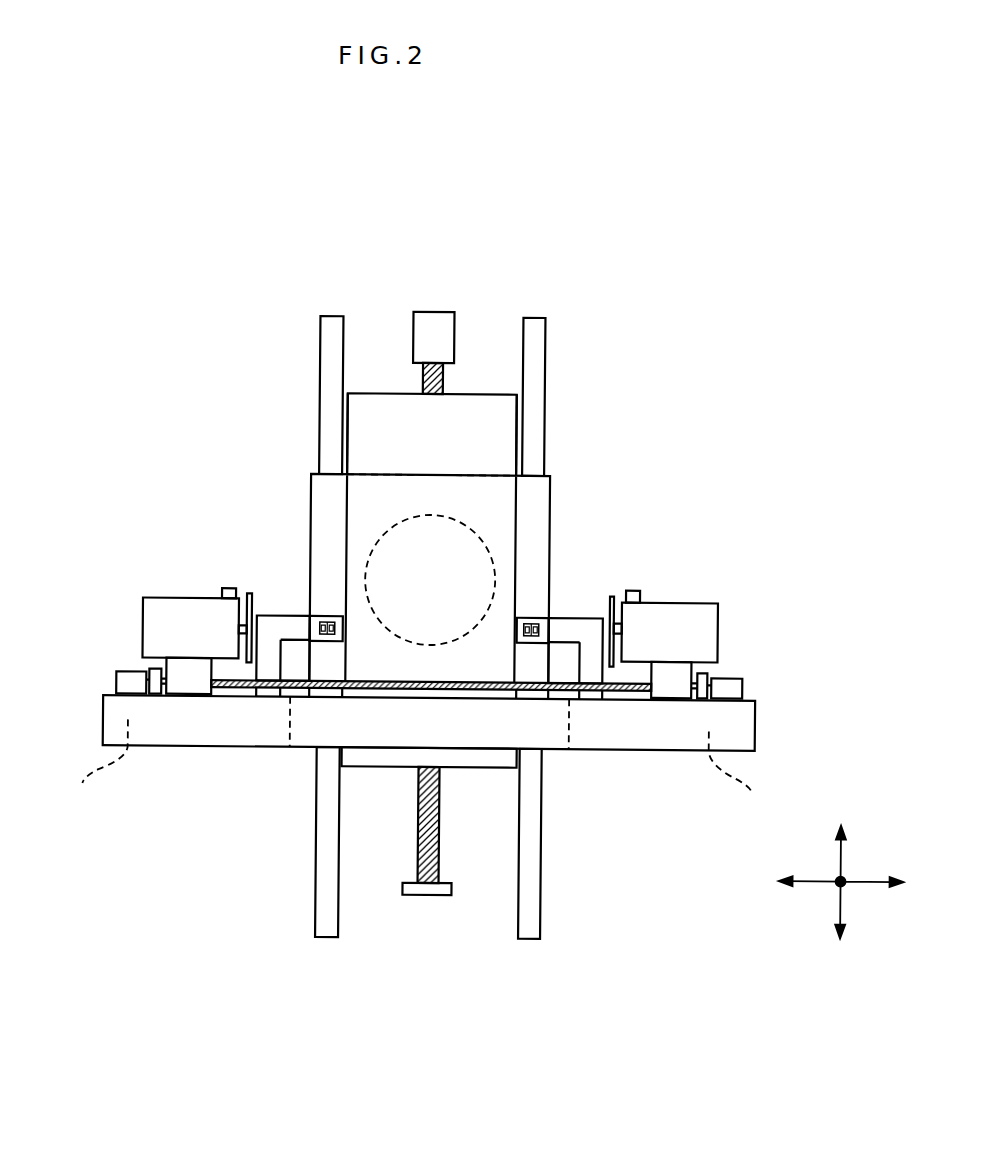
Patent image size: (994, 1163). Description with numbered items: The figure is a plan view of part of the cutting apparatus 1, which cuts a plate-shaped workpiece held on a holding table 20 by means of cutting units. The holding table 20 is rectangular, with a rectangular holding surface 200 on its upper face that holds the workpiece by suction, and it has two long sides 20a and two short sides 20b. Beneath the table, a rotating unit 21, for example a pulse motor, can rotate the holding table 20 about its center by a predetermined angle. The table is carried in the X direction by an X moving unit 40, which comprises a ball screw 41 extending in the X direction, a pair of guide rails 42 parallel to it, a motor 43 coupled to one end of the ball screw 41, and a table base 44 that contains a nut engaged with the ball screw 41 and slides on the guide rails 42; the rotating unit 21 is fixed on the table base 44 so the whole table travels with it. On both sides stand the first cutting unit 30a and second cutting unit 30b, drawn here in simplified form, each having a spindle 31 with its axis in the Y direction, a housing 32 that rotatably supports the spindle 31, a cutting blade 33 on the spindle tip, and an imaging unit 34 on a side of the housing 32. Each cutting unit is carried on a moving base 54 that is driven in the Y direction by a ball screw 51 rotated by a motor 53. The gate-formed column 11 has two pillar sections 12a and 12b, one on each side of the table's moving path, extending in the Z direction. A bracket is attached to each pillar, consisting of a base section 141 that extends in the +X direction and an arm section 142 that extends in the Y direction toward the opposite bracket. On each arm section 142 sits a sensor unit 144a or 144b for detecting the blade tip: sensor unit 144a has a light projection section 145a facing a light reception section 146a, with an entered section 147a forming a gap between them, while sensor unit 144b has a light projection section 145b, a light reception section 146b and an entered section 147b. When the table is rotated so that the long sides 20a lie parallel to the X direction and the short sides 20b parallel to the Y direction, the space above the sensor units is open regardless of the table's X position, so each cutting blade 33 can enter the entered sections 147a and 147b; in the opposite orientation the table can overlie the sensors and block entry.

The cutting apparatus 1 is at (728, 414).
The gate-formed column 11 is at (298, 758).
The pillar section 12a is at (745, 777).
The pillar section 12b is at (95, 768).
The holding table 20 is at (469, 393).
The long sides 20a is at (516, 421).
The short sides 20b is at (373, 395).
The rectangular holding surface 200 is at (464, 408).
The rotating unit 21 is at (397, 522).
The first cutting unit 30a is at (742, 606).
The second cutting unit 30b is at (124, 601).
The spindle 31 is at (240, 631).
The housing 32 is at (153, 626).
The cutting blade 33 is at (252, 598).
The imaging unit 34 is at (222, 596).
The X moving unit 40 is at (427, 651).
The ball screw 41 is at (421, 802).
The guide rails 42 is at (318, 902).
The motor 43 is at (411, 337).
The table base 44 is at (381, 532).
The ball screw 51 is at (637, 690).
The motor 53 is at (125, 689).
The moving base 54 is at (188, 684).
The base section 141 is at (267, 672).
The arm section 142 is at (418, 679).
The sensor unit 144a is at (531, 602).
The sensor unit 144b is at (340, 615).
The light projection section 145a is at (488, 681).
The light projection section 145b is at (375, 680).
The light reception section 146a is at (578, 692).
The light reception section 146b is at (313, 643).
The entered section 147a is at (535, 636).
The entered section 147b is at (325, 636).